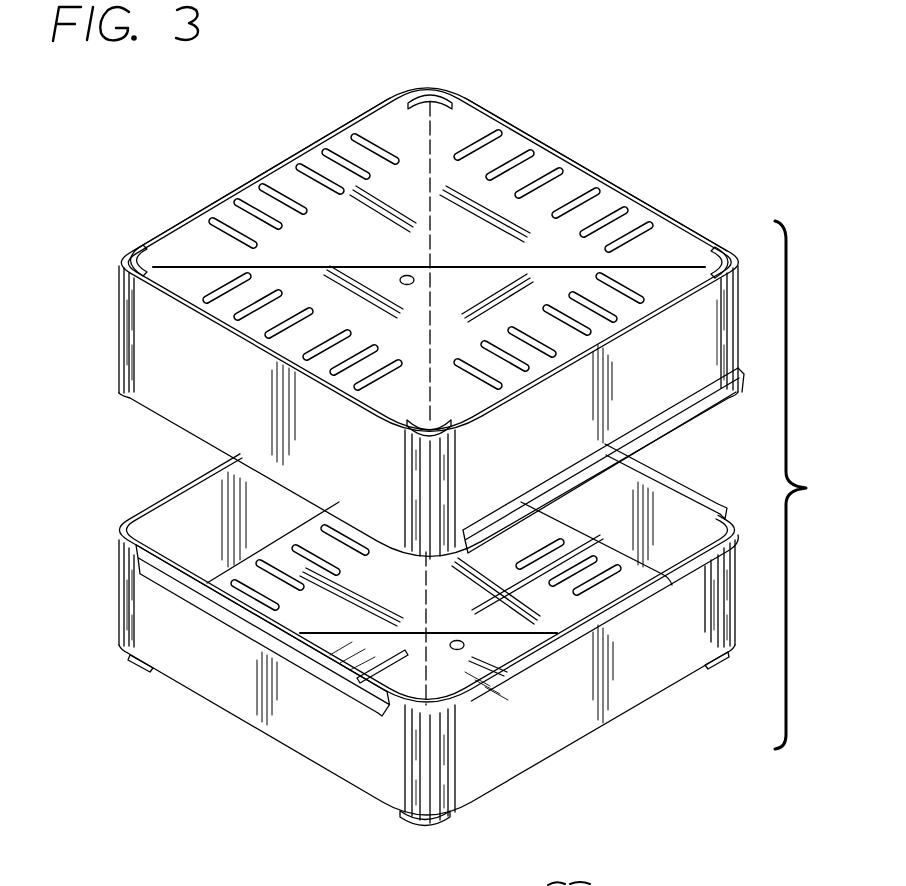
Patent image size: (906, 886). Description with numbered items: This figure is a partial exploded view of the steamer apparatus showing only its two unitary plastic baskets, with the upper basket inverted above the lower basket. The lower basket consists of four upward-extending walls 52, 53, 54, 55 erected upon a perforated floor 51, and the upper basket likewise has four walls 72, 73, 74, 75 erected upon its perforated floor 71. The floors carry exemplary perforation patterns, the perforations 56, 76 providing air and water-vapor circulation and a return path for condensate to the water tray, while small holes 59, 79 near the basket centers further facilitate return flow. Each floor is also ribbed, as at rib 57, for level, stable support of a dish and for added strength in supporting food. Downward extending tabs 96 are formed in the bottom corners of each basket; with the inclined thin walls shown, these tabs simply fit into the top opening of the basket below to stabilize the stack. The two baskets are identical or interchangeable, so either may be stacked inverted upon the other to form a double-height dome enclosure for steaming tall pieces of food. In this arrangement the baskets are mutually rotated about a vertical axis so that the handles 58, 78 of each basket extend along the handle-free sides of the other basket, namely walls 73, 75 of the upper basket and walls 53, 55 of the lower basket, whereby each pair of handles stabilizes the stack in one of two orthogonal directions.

The perforated floor 51 is at (394, 626).
The wall 52 is at (305, 722).
The wall 53 is at (185, 523).
The wall 54 is at (665, 508).
The wall 55 is at (540, 735).
The basket-floor perforations 56 is at (600, 583).
The rib 57 is at (367, 670).
The basket handle 58 is at (140, 597).
The small hole 59 is at (457, 645).
The perforated floor 71 is at (434, 323).
The wall 72 is at (208, 197).
The wall 73 is at (660, 203).
The wall 74 is at (683, 335).
The wall 75 is at (205, 378).
The basket-floor perforations 76 is at (290, 212).
The basket handle 78 is at (700, 405).
The small hole 79 is at (407, 280).
The downward extending tab 96 is at (455, 92).